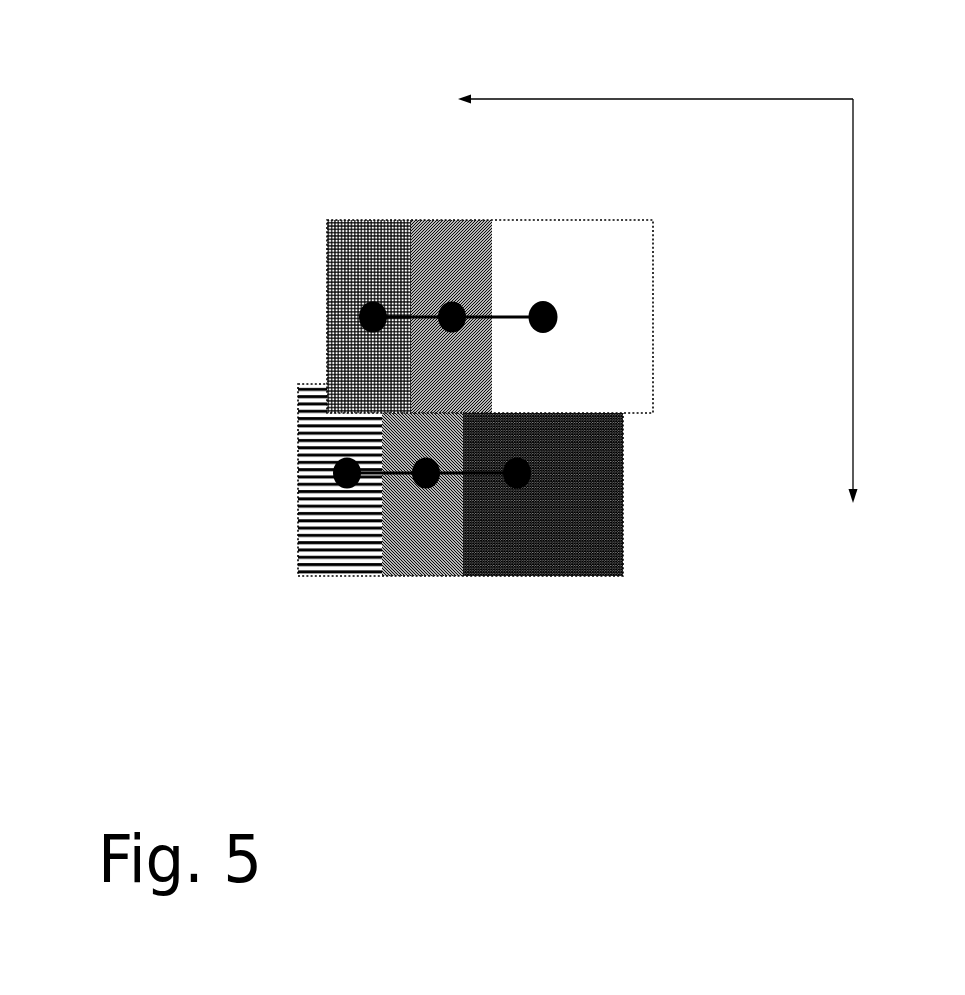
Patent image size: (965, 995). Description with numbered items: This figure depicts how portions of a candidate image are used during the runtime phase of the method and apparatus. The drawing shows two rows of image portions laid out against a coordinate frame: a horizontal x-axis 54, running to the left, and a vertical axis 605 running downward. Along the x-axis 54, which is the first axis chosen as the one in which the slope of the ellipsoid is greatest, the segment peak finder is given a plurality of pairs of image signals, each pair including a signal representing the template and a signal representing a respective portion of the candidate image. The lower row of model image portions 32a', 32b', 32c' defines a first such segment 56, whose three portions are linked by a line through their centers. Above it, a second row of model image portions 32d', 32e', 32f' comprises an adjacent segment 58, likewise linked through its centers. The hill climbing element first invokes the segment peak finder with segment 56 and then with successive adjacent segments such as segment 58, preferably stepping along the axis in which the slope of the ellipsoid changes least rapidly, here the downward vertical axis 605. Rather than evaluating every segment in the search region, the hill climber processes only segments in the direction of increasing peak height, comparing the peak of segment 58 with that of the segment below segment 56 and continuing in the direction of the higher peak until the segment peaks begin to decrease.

The model image portion 32a' is at (326, 527).
The model image portion 32b' is at (422, 527).
The model image portion 32c' is at (543, 523).
The model image portion 32d' is at (361, 283).
The model image portion 32e' is at (463, 279).
The model image portion 32f' is at (572, 288).
The x-axis 54 is at (742, 95).
The first segment 56 is at (352, 455).
The segment 58 is at (365, 305).
The y-axis 605 is at (858, 263).